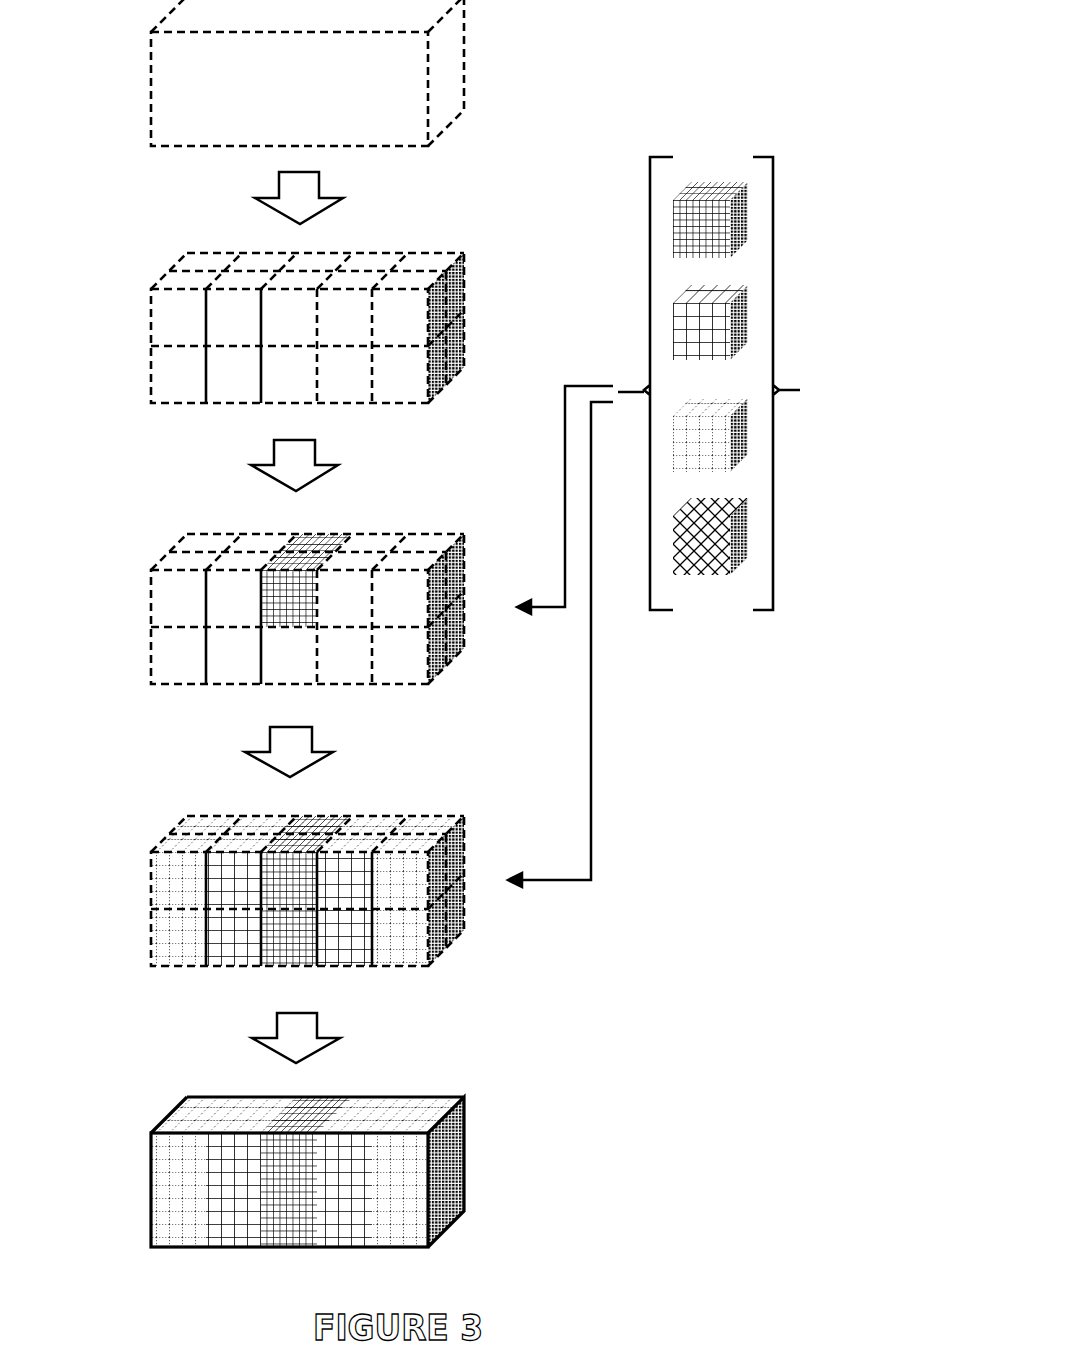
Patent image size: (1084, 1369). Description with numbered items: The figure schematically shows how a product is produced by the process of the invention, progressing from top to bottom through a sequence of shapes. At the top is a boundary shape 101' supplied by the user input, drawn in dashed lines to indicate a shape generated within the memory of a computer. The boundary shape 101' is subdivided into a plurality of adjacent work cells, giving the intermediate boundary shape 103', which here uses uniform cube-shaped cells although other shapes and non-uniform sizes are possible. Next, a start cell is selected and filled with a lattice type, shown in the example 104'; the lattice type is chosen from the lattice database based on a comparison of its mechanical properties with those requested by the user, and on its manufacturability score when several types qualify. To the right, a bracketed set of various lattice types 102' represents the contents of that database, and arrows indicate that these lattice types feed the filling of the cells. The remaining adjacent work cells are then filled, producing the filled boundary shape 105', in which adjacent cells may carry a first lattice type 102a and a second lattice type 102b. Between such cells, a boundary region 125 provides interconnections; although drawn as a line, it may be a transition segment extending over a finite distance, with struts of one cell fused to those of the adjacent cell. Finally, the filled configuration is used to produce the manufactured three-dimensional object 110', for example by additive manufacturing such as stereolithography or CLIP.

The boundary shape 101' is at (352, 73).
The intermediate boundary shape 103' is at (351, 328).
The start cell selection example 104' is at (344, 609).
The filled boundary shape 105' is at (344, 891).
The manufactured 3D object 110' is at (349, 1172).
The lattice types 102' is at (735, 383).
The first lattice type 102a is at (345, 957).
The boundary region 125 is at (375, 952).
The second lattice type 102b is at (423, 950).